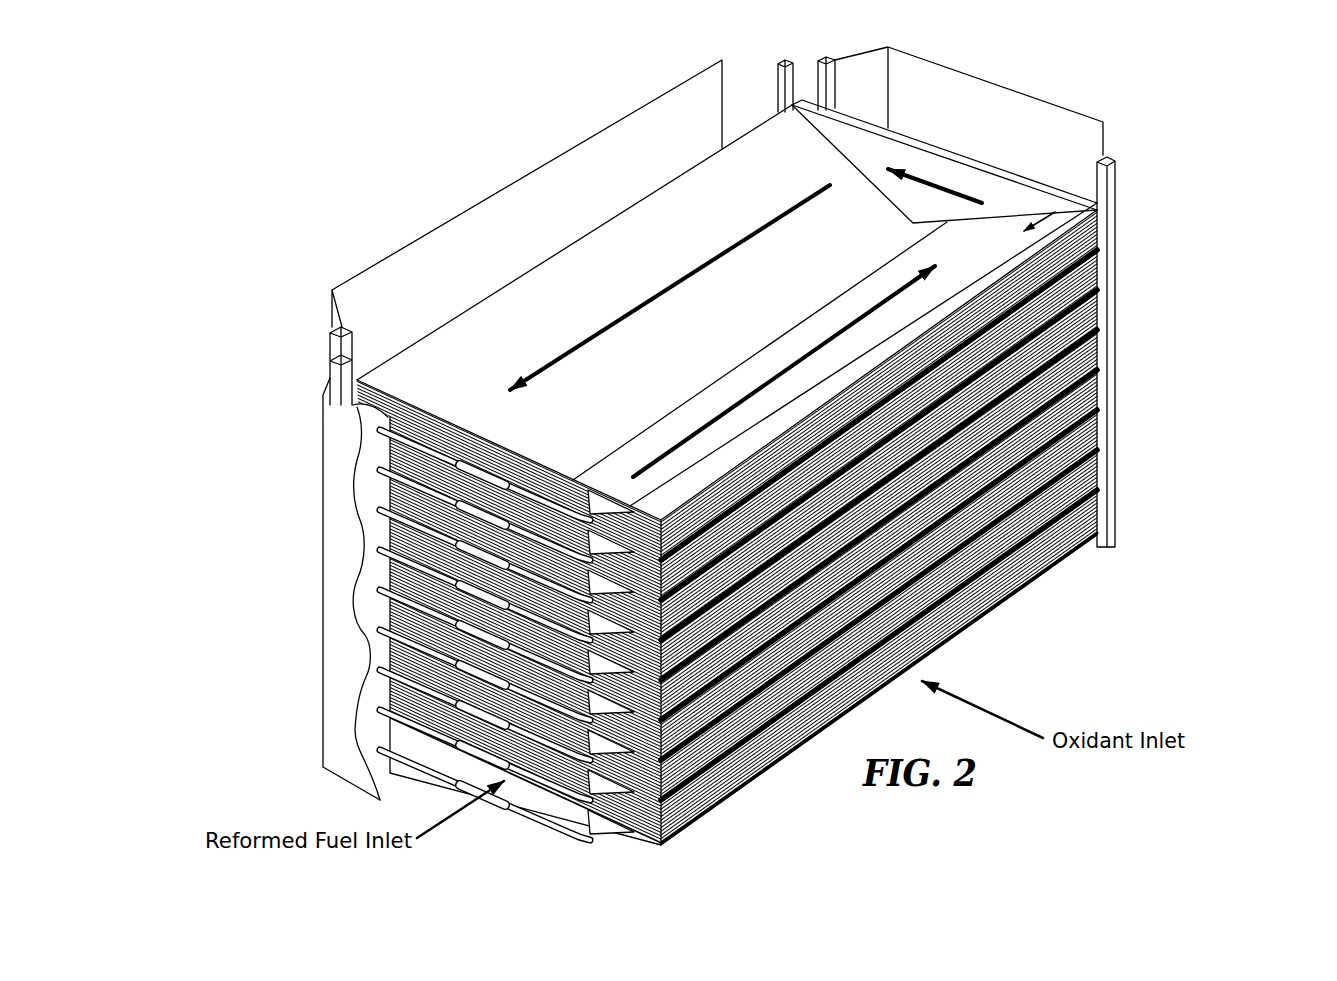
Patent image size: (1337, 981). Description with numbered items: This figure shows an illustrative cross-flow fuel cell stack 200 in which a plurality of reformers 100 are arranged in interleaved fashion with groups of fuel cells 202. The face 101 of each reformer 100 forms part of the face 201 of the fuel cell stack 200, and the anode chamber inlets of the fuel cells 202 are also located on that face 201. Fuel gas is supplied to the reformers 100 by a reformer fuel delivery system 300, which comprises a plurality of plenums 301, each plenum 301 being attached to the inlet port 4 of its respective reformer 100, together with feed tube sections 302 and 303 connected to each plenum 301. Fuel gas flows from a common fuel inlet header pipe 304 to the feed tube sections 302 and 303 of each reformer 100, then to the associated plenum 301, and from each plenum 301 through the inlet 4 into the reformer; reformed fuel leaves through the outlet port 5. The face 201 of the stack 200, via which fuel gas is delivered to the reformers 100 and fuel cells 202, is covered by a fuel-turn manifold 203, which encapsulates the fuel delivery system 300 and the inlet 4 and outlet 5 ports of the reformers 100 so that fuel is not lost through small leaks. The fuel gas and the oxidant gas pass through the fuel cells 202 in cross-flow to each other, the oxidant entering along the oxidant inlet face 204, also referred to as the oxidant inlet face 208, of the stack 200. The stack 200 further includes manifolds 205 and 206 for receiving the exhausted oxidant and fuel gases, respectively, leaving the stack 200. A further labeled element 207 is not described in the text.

The reformer 100 is at (1098, 208).
The face of reformer 101 is at (345, 392).
The fuel cell stack 200 is at (1142, 437).
The face of fuel cell stack 201 is at (397, 440).
The fuel cells 202 is at (1098, 210).
The fuel-turn manifold 203 is at (337, 432).
The oxidant inlet face 204 is at (1067, 323).
The manifold for exhausted oxidant gas 205 is at (545, 180).
The manifold for exhausted fuel gas 206 is at (1010, 117).
The top edge rail 207 is at (910, 135).
The oxidant inlet face 208 is at (630, 208).
The reformer fuel delivery system 300 is at (370, 552).
The plenum 301 is at (600, 503).
The feed tube section 302 is at (428, 452).
The feed tube section 303 is at (517, 492).
The common fuel inlet header pipe 304 is at (360, 710).
The inlet port 4 is at (634, 510).
The outlet port 5 is at (410, 402).